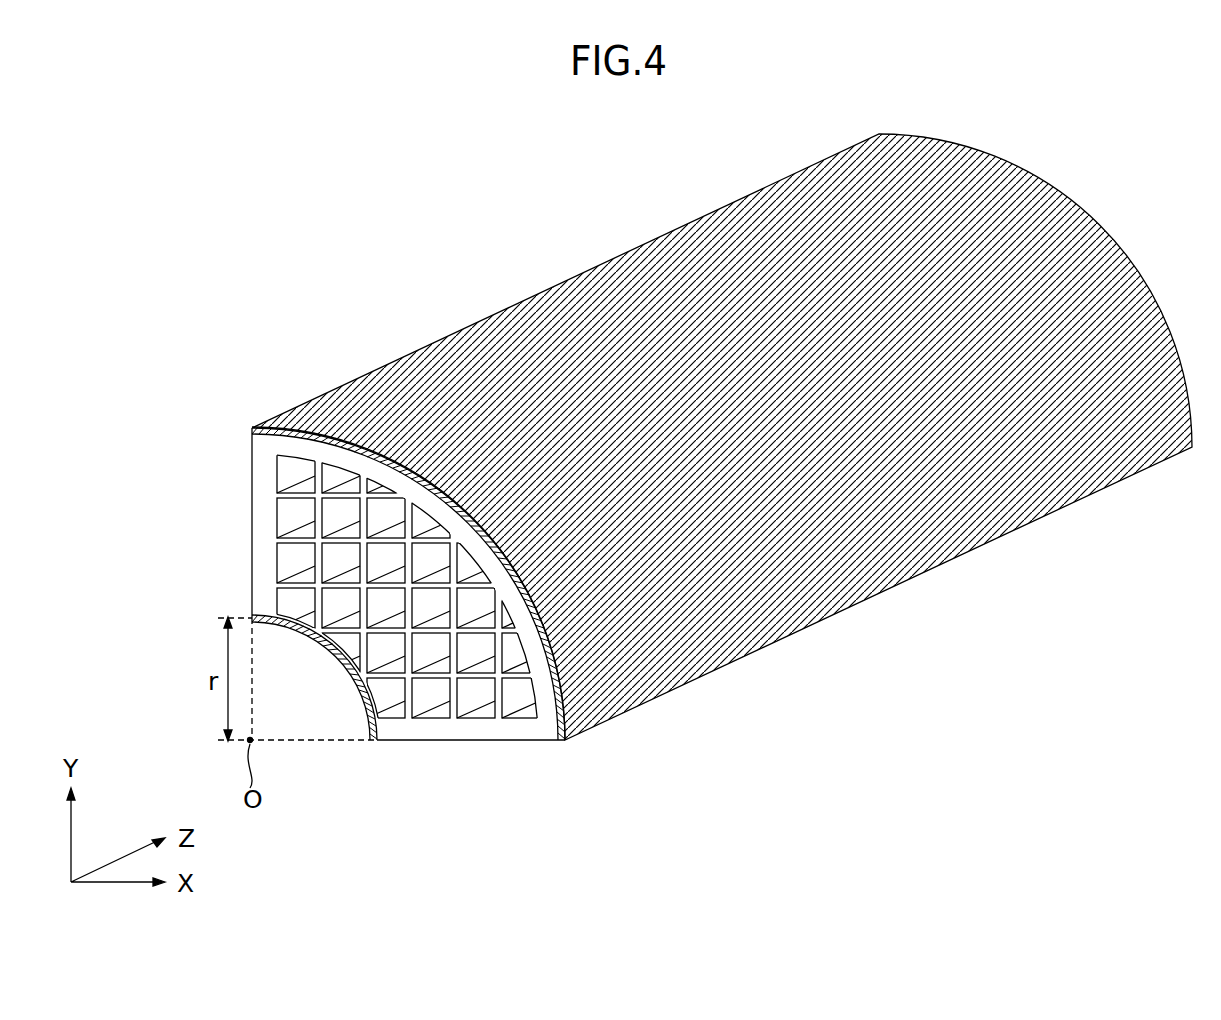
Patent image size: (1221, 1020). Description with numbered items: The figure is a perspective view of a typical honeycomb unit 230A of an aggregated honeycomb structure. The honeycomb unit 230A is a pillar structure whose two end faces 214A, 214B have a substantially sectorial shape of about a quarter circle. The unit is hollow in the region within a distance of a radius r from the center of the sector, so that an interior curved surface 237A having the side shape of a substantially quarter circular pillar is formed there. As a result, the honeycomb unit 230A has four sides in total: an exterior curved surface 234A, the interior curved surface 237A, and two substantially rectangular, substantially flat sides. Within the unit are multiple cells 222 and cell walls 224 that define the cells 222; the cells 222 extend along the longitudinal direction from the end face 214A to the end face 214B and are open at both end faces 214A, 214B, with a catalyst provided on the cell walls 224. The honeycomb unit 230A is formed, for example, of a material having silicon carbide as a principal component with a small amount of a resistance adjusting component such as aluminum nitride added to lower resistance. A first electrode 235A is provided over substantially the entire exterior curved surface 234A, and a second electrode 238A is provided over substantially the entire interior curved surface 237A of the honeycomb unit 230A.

The honeycomb unit 230A is at (443, 200).
The end face 214A is at (319, 605).
The end face 214B is at (731, 437).
The exterior curved surface 234A is at (276, 432).
The cells 222 is at (292, 518).
The cell walls 224 is at (342, 596).
The second electrode 238A is at (279, 692).
The interior curved surface 237A is at (393, 723).
The first electrode 235A is at (945, 518).